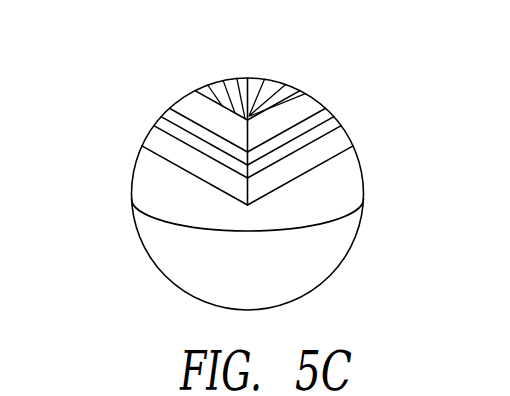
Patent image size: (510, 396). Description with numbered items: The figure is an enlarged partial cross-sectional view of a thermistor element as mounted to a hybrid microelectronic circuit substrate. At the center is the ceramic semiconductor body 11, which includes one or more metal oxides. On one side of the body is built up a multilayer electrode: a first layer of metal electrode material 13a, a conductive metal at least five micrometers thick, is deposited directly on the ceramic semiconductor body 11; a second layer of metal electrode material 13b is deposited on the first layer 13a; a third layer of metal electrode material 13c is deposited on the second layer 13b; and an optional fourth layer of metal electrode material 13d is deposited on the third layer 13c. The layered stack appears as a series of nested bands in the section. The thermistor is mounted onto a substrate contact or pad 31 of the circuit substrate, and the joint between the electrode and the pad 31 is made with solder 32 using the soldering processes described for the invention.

The ceramic semiconductor body 11 is at (262, 76).
The first layer of metal electrode material 13a is at (180, 102).
The second layer of metal electrode material 13b is at (335, 102).
The third layer of metal electrode material 13c is at (148, 115).
The fourth layer of metal electrode material 13d is at (337, 140).
The substrate contact or pad 31 is at (177, 257).
The solder 32 is at (348, 185).